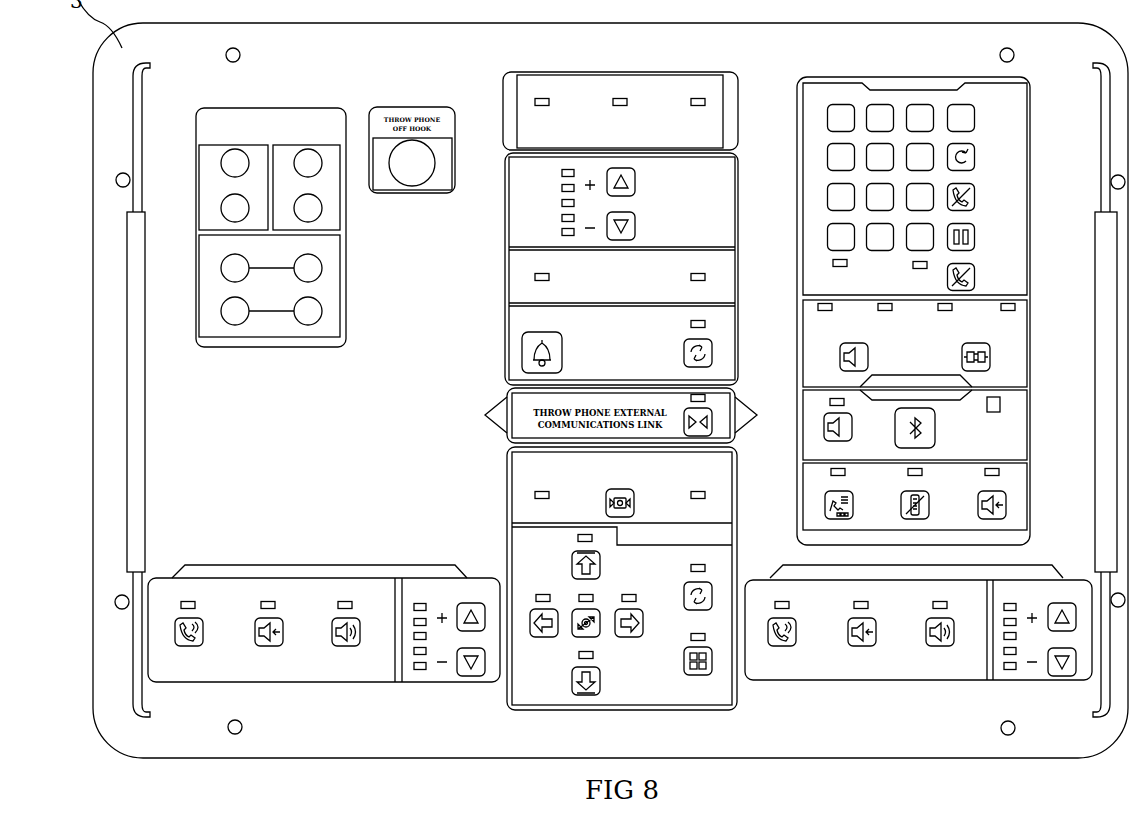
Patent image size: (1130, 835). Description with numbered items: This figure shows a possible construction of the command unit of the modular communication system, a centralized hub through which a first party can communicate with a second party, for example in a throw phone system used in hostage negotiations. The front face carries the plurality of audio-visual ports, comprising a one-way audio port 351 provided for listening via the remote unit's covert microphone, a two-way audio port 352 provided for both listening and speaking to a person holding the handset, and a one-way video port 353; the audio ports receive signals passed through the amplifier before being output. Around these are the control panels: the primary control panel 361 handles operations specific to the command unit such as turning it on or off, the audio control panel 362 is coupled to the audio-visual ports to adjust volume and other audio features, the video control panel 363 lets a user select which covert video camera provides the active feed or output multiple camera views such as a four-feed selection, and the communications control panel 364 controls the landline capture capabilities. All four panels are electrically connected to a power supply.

The one-way audio port 351 is at (229, 163).
The two-way audio port 352 is at (318, 266).
The one-way video port 353 is at (318, 309).
The primary control panel 361 is at (612, 62).
The audio control panel 362 is at (302, 551).
The video control panel 363 is at (624, 721).
The communications control panel 364 is at (903, 66).